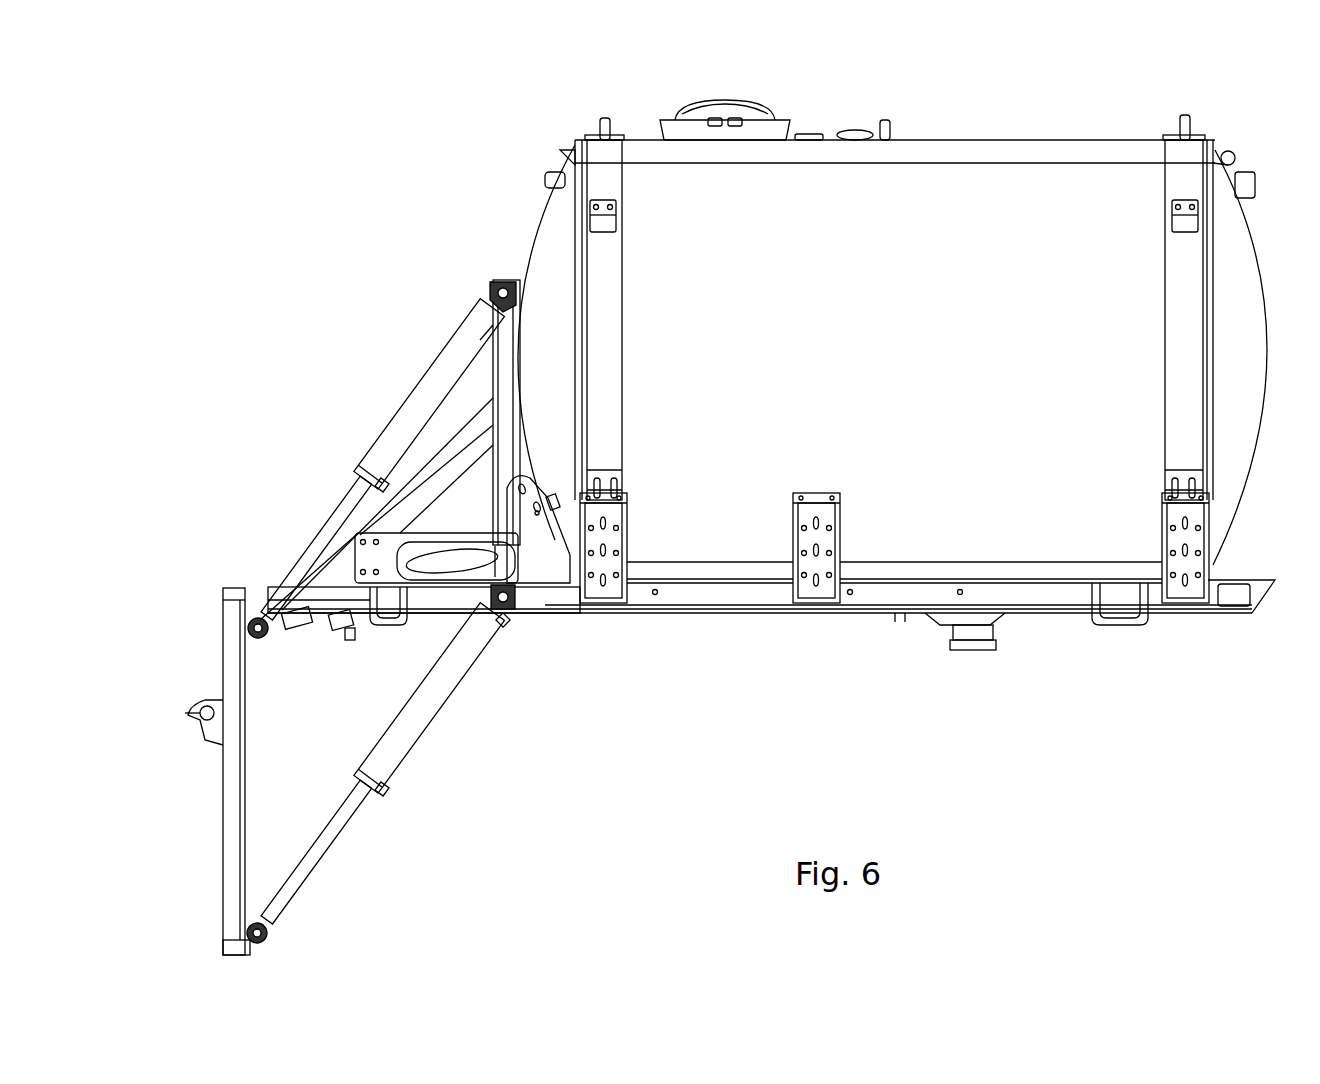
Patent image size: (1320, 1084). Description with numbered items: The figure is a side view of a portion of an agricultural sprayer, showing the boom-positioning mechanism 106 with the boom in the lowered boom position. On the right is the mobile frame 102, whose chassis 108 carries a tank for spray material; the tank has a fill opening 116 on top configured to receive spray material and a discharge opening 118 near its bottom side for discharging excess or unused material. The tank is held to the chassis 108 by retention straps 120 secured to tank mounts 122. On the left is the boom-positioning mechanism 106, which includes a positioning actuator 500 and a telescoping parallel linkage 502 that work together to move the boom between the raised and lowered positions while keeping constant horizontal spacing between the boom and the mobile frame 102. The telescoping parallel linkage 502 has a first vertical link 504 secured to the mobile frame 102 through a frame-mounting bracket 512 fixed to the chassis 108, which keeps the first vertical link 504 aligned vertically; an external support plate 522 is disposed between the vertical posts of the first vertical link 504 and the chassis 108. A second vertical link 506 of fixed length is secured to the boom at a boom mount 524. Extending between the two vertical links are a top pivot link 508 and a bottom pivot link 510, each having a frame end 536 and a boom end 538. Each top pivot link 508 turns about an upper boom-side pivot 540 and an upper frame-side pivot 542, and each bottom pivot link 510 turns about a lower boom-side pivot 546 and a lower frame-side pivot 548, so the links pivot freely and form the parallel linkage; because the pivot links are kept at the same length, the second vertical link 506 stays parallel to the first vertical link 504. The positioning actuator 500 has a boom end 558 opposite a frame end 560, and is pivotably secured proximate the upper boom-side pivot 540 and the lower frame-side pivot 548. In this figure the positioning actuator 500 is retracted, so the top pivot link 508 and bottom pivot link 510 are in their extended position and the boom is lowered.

The mobile frame 102 is at (1027, 120).
The boom-positioning mechanism 106 is at (404, 564).
The chassis 108 is at (725, 595).
The fill opening 116 is at (722, 92).
The discharge opening 118 is at (980, 650).
The retention strap 120 is at (612, 312).
The tank mount 122 is at (612, 595).
The positioning actuator 500 is at (404, 564).
The telescoping parallel linkage 502 is at (376, 773).
The first vertical link 504 is at (510, 385).
The second vertical link 506 is at (222, 838).
The top pivot link 508 is at (405, 397).
The bottom pivot link 510 is at (410, 738).
The frame-mounting bracket 512 is at (545, 570).
The external support plate 522 is at (455, 465).
The boom mount 524 is at (198, 704).
The frame end 536 is at (443, 288).
The boom end 538 is at (275, 497).
The upper boom-side pivot 540 is at (278, 645).
The upper frame-side pivot 542 is at (503, 278).
The lower boom-side pivot 546 is at (270, 935).
The lower frame-side pivot 548 is at (505, 625).
The boom end 558 is at (256, 582).
The frame end 560 is at (376, 652).